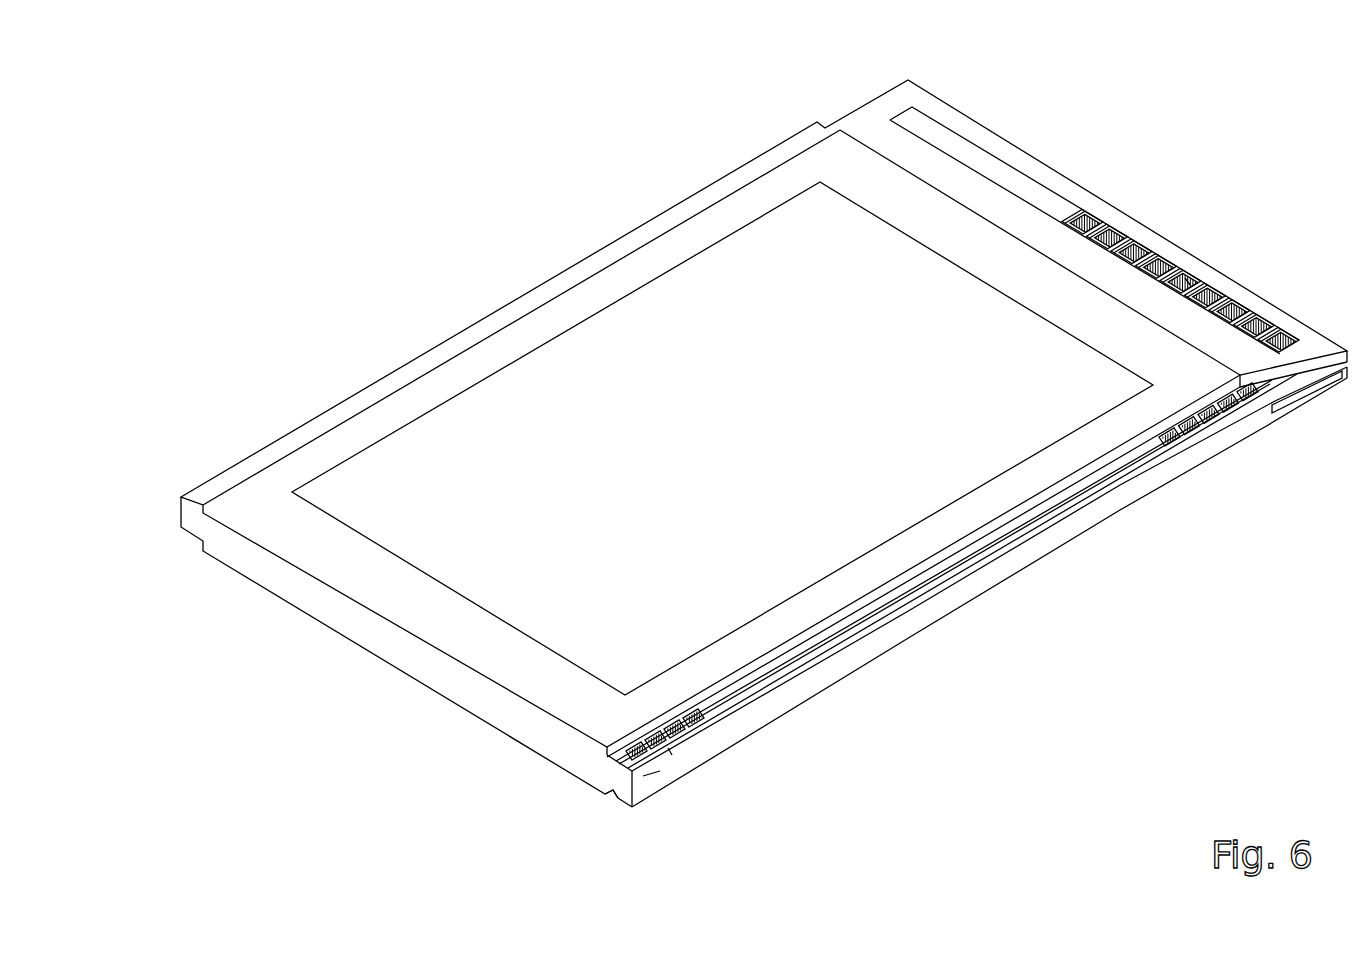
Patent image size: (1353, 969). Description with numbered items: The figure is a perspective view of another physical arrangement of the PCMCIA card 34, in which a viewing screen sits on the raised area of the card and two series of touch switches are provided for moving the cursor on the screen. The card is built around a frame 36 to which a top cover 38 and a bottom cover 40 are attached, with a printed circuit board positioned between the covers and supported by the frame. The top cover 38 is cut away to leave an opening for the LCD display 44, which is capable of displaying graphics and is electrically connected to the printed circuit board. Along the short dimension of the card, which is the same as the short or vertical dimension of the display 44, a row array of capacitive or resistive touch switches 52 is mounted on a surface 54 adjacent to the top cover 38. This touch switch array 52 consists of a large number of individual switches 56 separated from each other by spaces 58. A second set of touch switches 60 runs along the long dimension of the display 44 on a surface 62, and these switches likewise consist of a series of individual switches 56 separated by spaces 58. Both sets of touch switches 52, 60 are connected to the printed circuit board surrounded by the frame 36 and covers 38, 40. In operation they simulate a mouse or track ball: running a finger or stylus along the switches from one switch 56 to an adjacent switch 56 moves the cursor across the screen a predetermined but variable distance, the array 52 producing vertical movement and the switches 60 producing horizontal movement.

The electronic card assembly 34 is at (523, 269).
The frame 36 is at (333, 410).
The top cover 38 is at (860, 150).
The bottom cover 40 is at (245, 583).
The LCD display 44 is at (722, 438).
The touch switch array 52 is at (923, 103).
The surface 54 is at (910, 85).
The individual switches 56 is at (1213, 289).
The spaces 58 is at (1190, 282).
The touch switches 60 is at (1180, 460).
The surface 62 is at (632, 762).